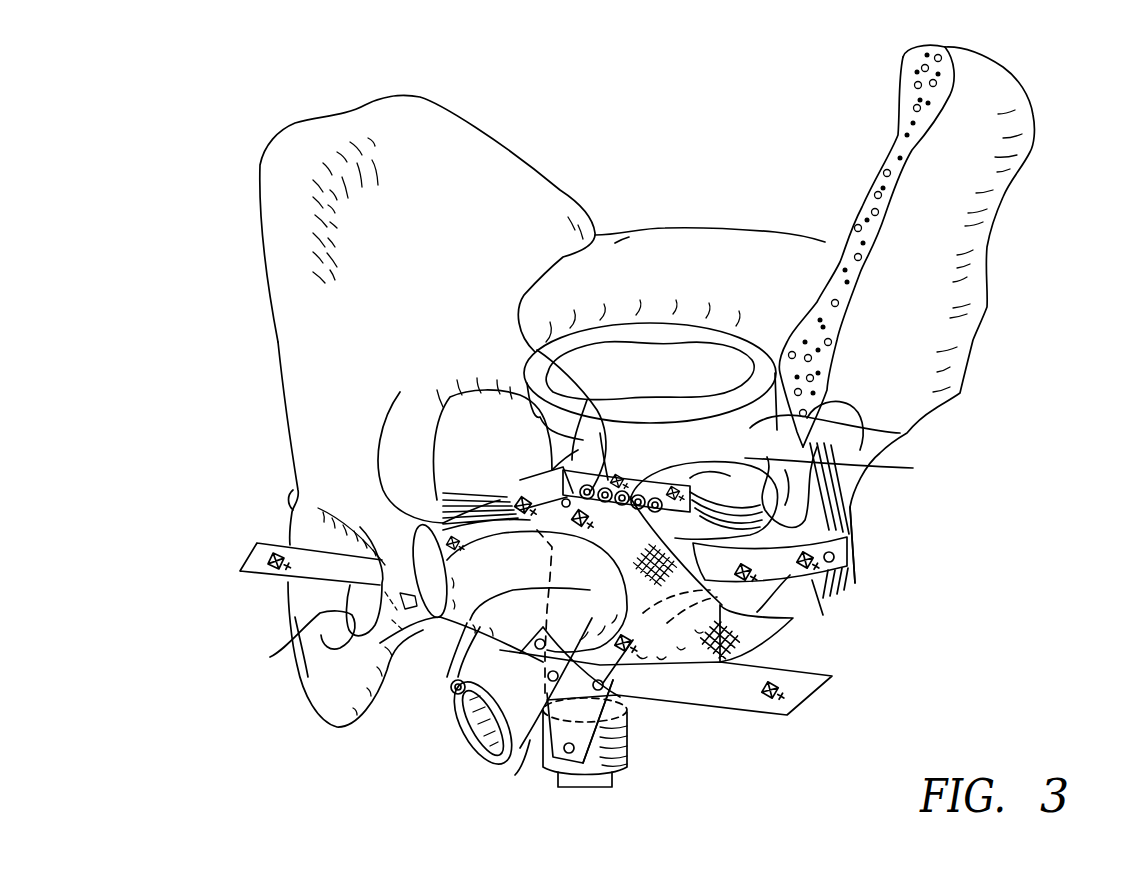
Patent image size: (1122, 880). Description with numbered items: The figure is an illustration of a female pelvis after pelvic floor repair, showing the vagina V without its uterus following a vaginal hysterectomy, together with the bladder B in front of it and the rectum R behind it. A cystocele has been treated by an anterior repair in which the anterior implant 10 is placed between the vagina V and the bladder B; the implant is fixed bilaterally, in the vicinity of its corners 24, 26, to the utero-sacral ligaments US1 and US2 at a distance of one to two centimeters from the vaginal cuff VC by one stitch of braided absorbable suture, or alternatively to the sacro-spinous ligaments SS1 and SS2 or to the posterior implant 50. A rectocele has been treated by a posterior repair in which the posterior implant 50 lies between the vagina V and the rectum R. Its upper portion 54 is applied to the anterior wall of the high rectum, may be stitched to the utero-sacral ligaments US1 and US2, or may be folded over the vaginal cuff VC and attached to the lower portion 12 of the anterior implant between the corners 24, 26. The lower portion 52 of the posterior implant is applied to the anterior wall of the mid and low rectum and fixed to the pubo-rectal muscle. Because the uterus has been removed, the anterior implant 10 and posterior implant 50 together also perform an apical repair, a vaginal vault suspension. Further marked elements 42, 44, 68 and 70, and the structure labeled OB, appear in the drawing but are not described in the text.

The anterior implant 10 is at (777, 649).
The lower portion 12 is at (585, 464).
The corner 24 is at (682, 505).
The corner 26 is at (540, 442).
The second strap 42 is at (757, 715).
The first strap 44 is at (273, 528).
The posterior implant 50 is at (620, 700).
The lower portion 52 is at (530, 740).
The upper portion 54 is at (638, 464).
The ligament attachment 68 is at (483, 500).
The third strap 70 is at (787, 550).
The utero-sacral ligament US1 is at (537, 350).
The utero-sacral ligament US2 is at (817, 500).
The sacro-spinous ligament SS1 is at (527, 477).
The sacro-spinous ligament SS2 is at (867, 576).
The rectum R is at (900, 433).
The vaginal cuff VC is at (857, 470).
The obturator OB is at (230, 654).
The bladder B is at (465, 645).
The vagina V is at (473, 747).